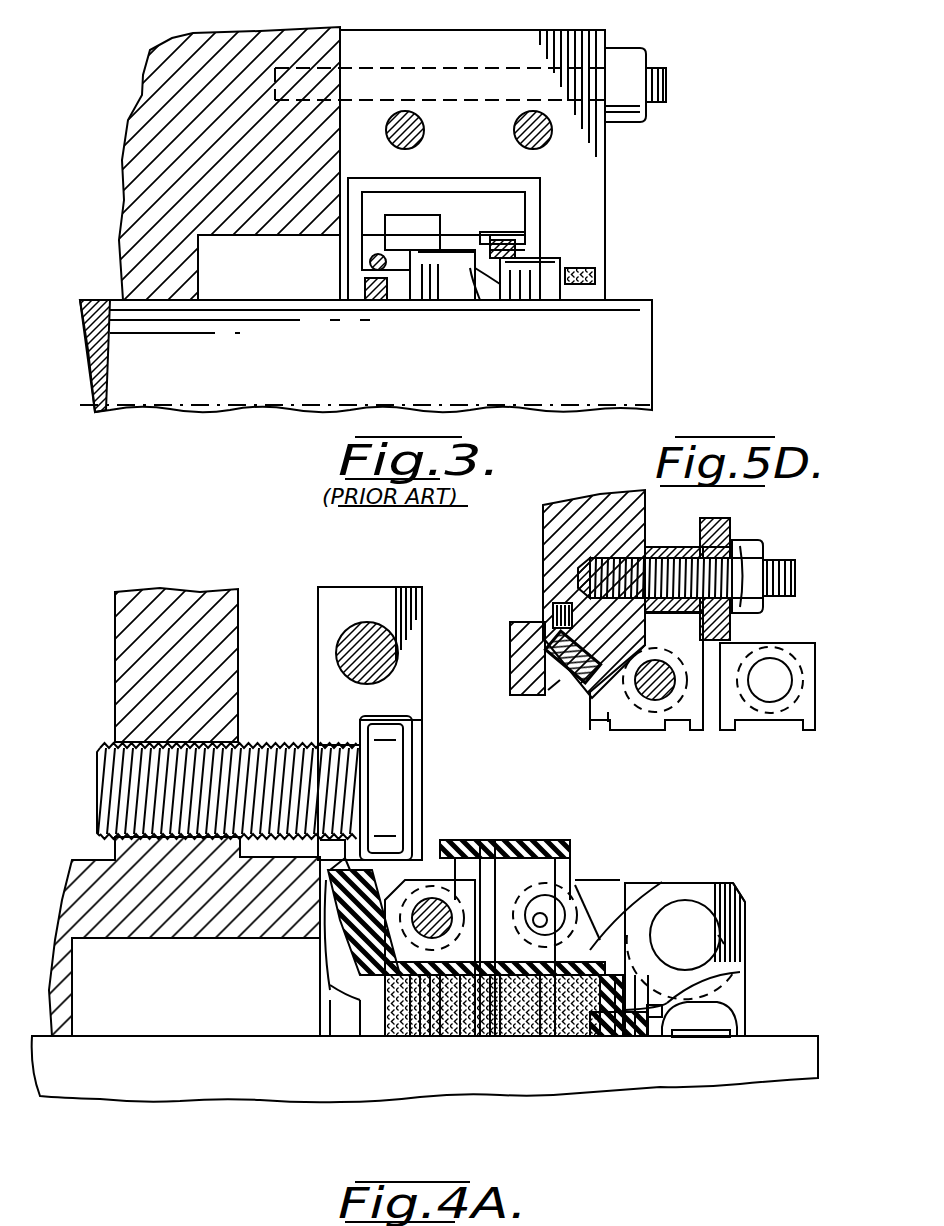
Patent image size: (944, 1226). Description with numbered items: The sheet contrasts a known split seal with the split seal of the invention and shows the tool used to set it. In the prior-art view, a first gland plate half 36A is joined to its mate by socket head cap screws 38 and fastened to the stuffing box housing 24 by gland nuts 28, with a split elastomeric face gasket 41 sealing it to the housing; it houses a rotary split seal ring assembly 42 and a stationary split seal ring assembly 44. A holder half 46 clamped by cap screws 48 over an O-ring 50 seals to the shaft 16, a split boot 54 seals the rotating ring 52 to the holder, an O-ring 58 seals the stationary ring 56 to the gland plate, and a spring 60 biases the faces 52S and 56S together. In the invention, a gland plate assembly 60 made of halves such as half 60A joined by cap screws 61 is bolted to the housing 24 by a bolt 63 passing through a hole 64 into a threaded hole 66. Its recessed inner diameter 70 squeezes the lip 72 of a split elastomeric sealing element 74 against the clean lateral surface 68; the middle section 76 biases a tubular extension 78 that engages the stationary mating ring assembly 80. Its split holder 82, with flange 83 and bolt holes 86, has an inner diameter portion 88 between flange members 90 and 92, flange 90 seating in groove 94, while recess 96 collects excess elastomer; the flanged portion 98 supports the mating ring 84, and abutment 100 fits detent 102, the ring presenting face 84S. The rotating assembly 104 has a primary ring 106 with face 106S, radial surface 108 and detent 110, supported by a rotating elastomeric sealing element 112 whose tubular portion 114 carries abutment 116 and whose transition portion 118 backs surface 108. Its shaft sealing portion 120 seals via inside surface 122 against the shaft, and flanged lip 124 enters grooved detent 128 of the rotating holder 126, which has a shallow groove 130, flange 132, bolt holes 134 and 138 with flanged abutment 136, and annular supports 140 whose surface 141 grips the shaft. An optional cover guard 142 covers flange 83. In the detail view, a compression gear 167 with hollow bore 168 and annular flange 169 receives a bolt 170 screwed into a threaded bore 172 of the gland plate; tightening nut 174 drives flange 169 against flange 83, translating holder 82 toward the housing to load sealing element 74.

In FIG. 3, the shaft 16 is at (640, 333).
In FIG. 4A, the shaft 16 is at (268, 1100).
In FIG. 3, the stuffing box housing 24 is at (146, 130).
In FIG. 5D, the stuffing box housing 24 is at (528, 625).
In FIG. 4A, the stuffing box housing 24 is at (90, 862).
In FIG. 3, the gland nuts 28 is at (628, 52).
In FIG. 3, the first gland plate half 36A is at (590, 138).
In FIG. 3, the socket head cap screws 38 is at (514, 128).
In FIG. 3, the split elastomeric face gasket 41 is at (342, 232).
In FIG. 3, the rotary split seal ring assembly 42 is at (388, 215).
In FIG. 3, the stationary split seal ring assembly 44 is at (518, 258).
In FIG. 3, the holder half 46 is at (365, 286).
In FIG. 3, the socket head cap screws 48 is at (370, 260).
In FIG. 3, the O-ring 50 is at (385, 302).
In FIG. 3, the rotating ring 52 is at (440, 288).
In FIG. 3, the sealing face 52S is at (500, 300).
In FIG. 3, the split elastomeric boot 54 is at (428, 252).
In FIG. 3, the stationary split seal ring 56 is at (545, 298).
In FIG. 3, the sealing face 56S is at (462, 302).
In FIG. 3, the O-ring 58 is at (525, 235).
In FIG. 3, the gland plate assembly 60 is at (598, 272).
In FIG. 5D, the gland plate assembly 60 is at (602, 484).
In FIG. 4A, the gland plate assembly 60 is at (429, 590).
In FIG. 4A, the split half of gland plate assembly 60A is at (375, 592).
In FIG. 4A, the socket head cap screws 61 is at (392, 648).
In FIG. 4A, the bolt 63 is at (398, 778).
In FIG. 4A, the hole 64 is at (320, 745).
In FIG. 4A, the threaded hole 66 is at (118, 745).
In FIG. 5D, the lateral surface 68 is at (510, 664).
In FIG. 4A, the lateral surface 68 is at (320, 865).
In FIG. 4A, the recessed inner diameter 70 is at (330, 880).
In FIG. 5D, the lip 72 is at (552, 678).
In FIG. 4A, the lip 72 is at (325, 900).
In FIG. 5D, the split elastomeric sealing element 74 is at (571, 696).
In FIG. 4A, the split elastomeric sealing element 74 is at (395, 832).
In FIG. 4A, the middle section 76 is at (325, 942).
In FIG. 4A, the tubular extension 78 is at (405, 1036).
In FIG. 4A, the stationary mating ring assembly 80 is at (420, 1050).
In FIG. 5D, the split holder 82 is at (608, 714).
In FIG. 4A, the split holder 82 is at (418, 880).
In FIG. 5D, the annular flange 83 is at (700, 632).
In FIG. 4A, the annular flange 83 is at (470, 845).
In FIG. 4A, the split mating sealing ring 84 is at (400, 1036).
In FIG. 4A, the sealing face 84S is at (478, 1036).
In FIG. 5D, the through hole 86 is at (654, 702).
In FIG. 4A, the through hole 86 is at (495, 858).
In FIG. 4A, the inner diameter portion 88 is at (335, 1010).
In FIG. 4A, the flange member 90 is at (342, 962).
In FIG. 4A, the second flange member 92 is at (536, 915).
In FIG. 4A, the groove 94 is at (330, 990).
In FIG. 4A, the recess 96 is at (340, 1036).
In FIG. 4A, the flanged portion 98 is at (385, 1030).
In FIG. 4A, the abutment 100 is at (430, 1036).
In FIG. 4A, the shallow groove detent 102 is at (440, 1036).
In FIG. 4A, the rotating split seal ring assembly 104 is at (737, 872).
In FIG. 4A, the split primary sealing ring 106 is at (490, 1036).
In FIG. 4A, the sealing face 106S is at (478, 1054).
In FIG. 4A, the surface 108 is at (555, 1036).
In FIG. 4A, the detent 110 is at (621, 916).
In FIG. 4A, the rotating elastomeric sealing element 112 is at (640, 980).
In FIG. 4A, the tubular extension portion 114 is at (685, 935).
In FIG. 4A, the abutment 116 is at (540, 1036).
In FIG. 4A, the transition portion 118 is at (605, 1036).
In FIG. 4A, the shaft sealing portion 120 is at (640, 1036).
In FIG. 4A, the inside surface 122 is at (625, 1036).
In FIG. 4A, the flanged lip 124 is at (655, 1036).
In FIG. 4A, the rotating holder 126 is at (742, 896).
In FIG. 4A, the grooved detent 128 is at (740, 976).
In FIG. 4A, the shallow groove 130 is at (648, 884).
In FIG. 4A, the flange 132 is at (500, 1036).
In FIG. 4A, the through hole 134 is at (580, 875).
In FIG. 4A, the flanged abutment 136 is at (585, 872).
In FIG. 4A, the second through hole 138 is at (722, 932).
In FIG. 4A, the flanged annular supports 140 is at (672, 1020).
In FIG. 4A, the inner diameter surface 141 is at (740, 1040).
In FIG. 4A, the elastomeric cover guard 142 is at (572, 880).
In FIG. 5D, the compression gear 167 is at (744, 532).
In FIG. 5D, the hollow bore 168 is at (668, 560).
In FIG. 5D, the annular flange 169 is at (704, 522).
In FIG. 5D, the bolt 170 is at (790, 562).
In FIG. 5D, the threaded bore 172 is at (575, 565).
In FIG. 5D, the nut 174 is at (785, 605).